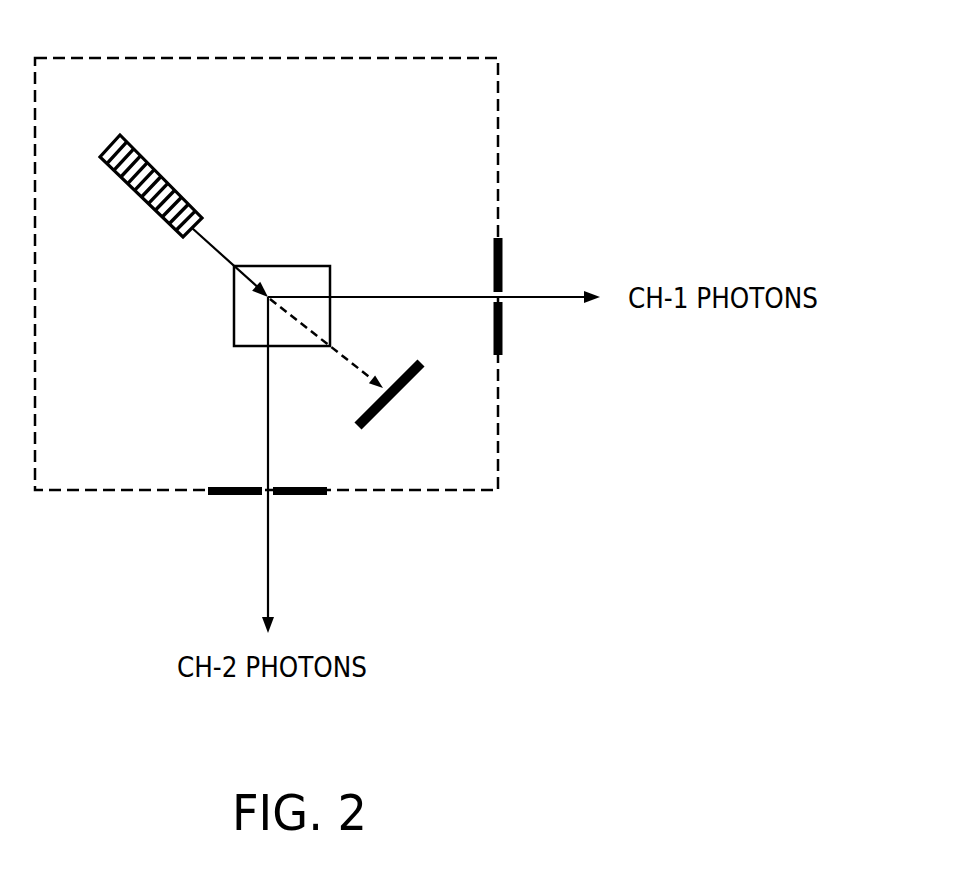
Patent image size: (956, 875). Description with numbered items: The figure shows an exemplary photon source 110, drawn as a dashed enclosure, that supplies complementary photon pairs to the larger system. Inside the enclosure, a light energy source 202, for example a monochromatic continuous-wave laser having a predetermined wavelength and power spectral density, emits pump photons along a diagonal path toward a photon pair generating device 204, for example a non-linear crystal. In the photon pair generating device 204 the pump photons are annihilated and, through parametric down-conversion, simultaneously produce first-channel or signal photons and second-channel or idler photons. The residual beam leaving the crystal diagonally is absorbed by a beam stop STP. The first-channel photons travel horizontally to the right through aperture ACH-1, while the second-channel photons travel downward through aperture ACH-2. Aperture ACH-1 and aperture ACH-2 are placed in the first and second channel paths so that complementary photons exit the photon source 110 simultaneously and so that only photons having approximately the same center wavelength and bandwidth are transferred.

The photon source 110 is at (167, 463).
The light energy source 202 is at (177, 187).
The photon pair generating device 204 is at (294, 266).
The beam stop STP is at (367, 424).
The aperture A_CH-1 ACH-1 is at (524, 270).
The aperture A_CH-2 ACH-2 is at (250, 512).